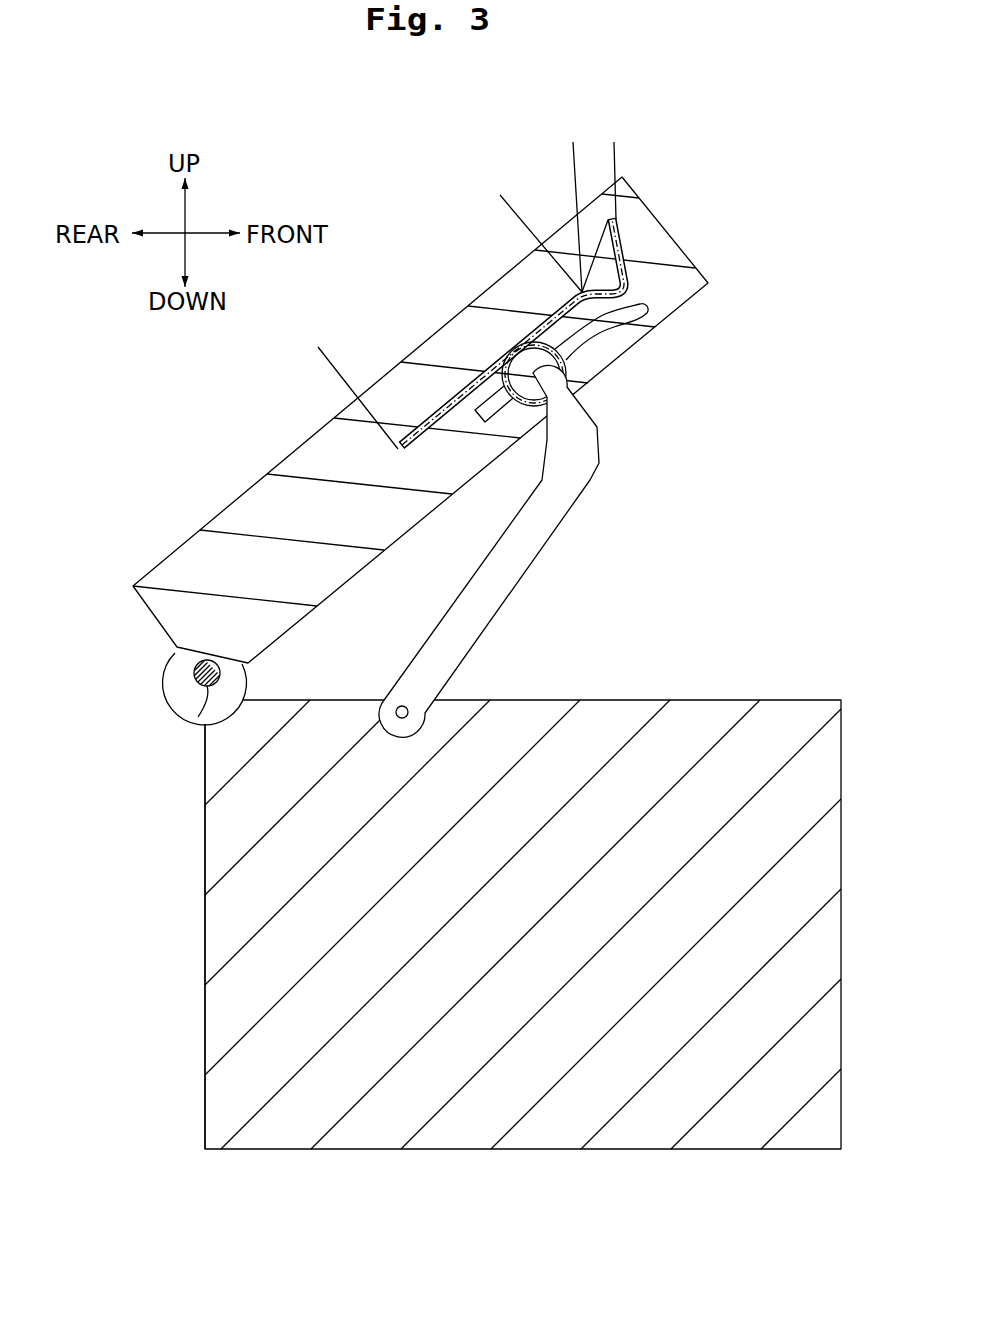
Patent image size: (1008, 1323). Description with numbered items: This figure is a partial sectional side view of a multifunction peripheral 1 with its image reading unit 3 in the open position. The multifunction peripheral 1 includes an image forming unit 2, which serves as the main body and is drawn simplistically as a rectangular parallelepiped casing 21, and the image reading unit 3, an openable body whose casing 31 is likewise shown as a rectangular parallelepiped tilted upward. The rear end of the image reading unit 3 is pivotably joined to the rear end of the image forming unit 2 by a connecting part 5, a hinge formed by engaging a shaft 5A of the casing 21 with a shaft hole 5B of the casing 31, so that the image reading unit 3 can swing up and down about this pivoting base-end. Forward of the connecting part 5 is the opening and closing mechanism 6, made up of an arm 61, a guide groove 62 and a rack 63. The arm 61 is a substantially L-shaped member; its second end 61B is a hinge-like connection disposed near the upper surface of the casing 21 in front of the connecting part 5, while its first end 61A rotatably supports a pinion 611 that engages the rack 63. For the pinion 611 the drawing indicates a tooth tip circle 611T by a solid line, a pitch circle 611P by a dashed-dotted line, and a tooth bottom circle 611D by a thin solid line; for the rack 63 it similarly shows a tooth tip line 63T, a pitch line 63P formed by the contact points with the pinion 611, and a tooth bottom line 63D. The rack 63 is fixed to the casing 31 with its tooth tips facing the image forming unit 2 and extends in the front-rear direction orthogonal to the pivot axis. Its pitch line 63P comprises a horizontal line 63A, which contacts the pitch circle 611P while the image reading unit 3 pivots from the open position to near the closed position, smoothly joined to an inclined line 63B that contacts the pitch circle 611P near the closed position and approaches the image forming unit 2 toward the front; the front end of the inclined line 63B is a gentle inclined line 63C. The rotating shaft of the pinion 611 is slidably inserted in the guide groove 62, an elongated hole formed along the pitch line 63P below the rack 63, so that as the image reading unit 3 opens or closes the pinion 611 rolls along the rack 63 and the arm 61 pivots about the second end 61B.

The multifunction peripheral 1 is at (391, 218).
The image forming unit 2 is at (466, 924).
The casing 21 is at (205, 990).
The image reading unit 3 is at (420, 420).
The casing 31 is at (217, 513).
The connecting part 5 is at (168, 699).
The shaft 5A is at (194, 674).
The shaft hole 5B is at (200, 724).
The opening and closing mechanism 6 is at (551, 521).
The arm 61 is at (507, 551).
The first end 61A is at (598, 432).
The second end 61B is at (403, 706).
The pinion 611 is at (607, 410).
The tooth tip circle 611T is at (568, 345).
The pitch circle 611P is at (568, 364).
The tooth bottom circle 611D is at (556, 380).
The guide groove 62 is at (637, 291).
The rack 63 is at (462, 340).
The horizontal line 63A is at (513, 192).
The inclined line 63B is at (614, 147).
The gentle inclined line 63C is at (586, 162).
The tooth tip line 63T is at (413, 442).
The pitch line 63P is at (395, 453).
The tooth bottom line 63D is at (398, 448).